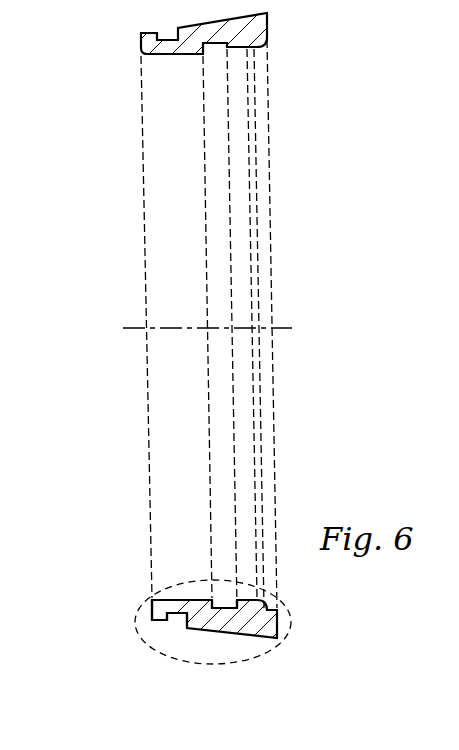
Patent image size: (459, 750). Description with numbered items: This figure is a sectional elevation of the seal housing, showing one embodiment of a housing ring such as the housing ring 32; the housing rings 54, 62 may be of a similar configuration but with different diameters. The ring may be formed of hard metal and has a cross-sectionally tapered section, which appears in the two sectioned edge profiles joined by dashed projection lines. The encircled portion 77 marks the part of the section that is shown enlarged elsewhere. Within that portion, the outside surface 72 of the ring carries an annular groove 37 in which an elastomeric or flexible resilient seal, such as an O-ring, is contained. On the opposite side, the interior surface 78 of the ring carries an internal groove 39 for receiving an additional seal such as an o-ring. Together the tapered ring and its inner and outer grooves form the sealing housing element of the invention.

The housing ring 32 is at (152, 324).
The housing ring 54 is at (207, 324).
The housing ring 62 is at (135, 398).
The encircled portion 77 is at (135, 622).
The interior surface 78 is at (167, 600).
The internal groove 39 is at (217, 600).
The annular groove 37 is at (175, 616).
The outside surface 72 is at (232, 638).